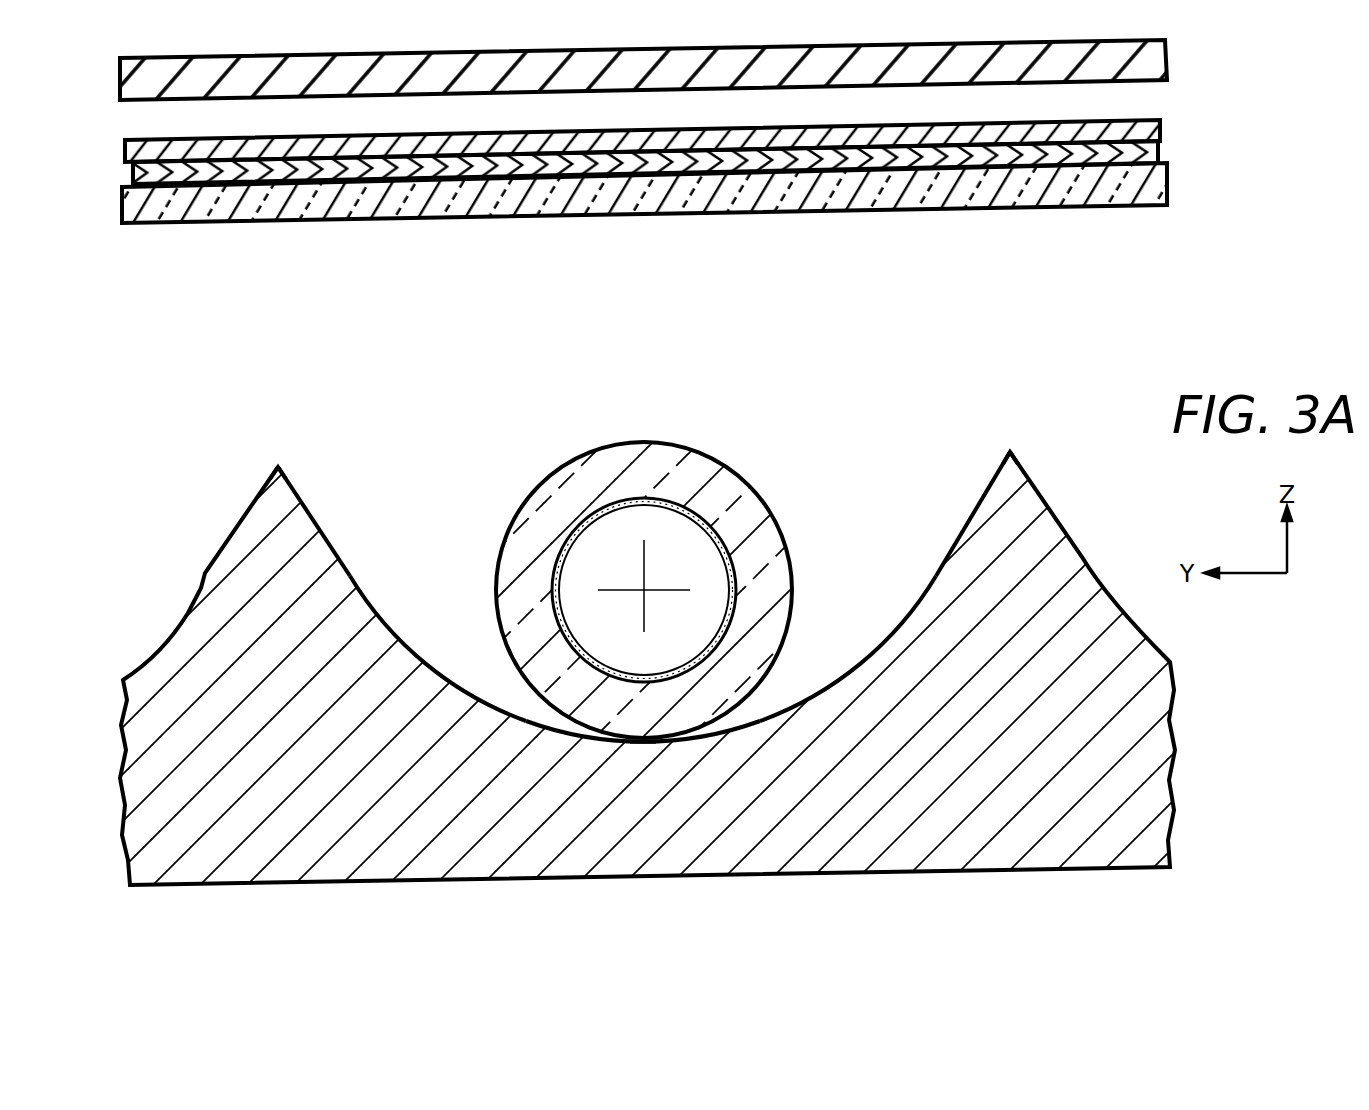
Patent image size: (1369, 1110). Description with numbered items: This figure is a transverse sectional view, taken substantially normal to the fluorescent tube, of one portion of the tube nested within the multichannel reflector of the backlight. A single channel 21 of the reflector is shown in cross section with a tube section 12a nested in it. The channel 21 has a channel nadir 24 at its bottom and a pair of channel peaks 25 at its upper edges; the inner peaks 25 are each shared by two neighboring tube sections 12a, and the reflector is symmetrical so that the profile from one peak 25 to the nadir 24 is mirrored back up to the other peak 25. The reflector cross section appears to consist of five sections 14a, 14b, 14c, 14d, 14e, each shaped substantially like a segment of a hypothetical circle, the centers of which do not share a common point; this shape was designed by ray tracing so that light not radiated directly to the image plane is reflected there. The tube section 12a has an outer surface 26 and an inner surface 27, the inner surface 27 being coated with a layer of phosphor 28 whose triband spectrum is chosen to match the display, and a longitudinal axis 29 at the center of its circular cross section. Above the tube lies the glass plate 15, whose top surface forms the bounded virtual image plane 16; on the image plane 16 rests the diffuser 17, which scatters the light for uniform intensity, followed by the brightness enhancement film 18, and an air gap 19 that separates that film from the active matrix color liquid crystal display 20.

The tube section 12a is at (748, 475).
The reflector section 14a is at (325, 540).
The reflector section 14b is at (428, 676).
The reflector section 14c is at (600, 740).
The reflector section 14d is at (838, 680).
The reflector section 14e is at (965, 528).
The glass plate 15 is at (1140, 180).
The image plane 16 is at (703, 162).
The diffuser 17 is at (1127, 157).
The brightness enhancement film 18 is at (1140, 132).
The air gap 19 is at (1095, 104).
The active matrix color liquid crystal display 20 is at (1105, 55).
The channel 21 is at (1008, 397).
The channel nadir 24 is at (644, 744).
The channel peak 25 is at (282, 466).
The outer surface 26 is at (552, 470).
The inner surface 27 is at (577, 570).
The phosphor 28 is at (607, 505).
The longitudinal axis 29 is at (641, 588).